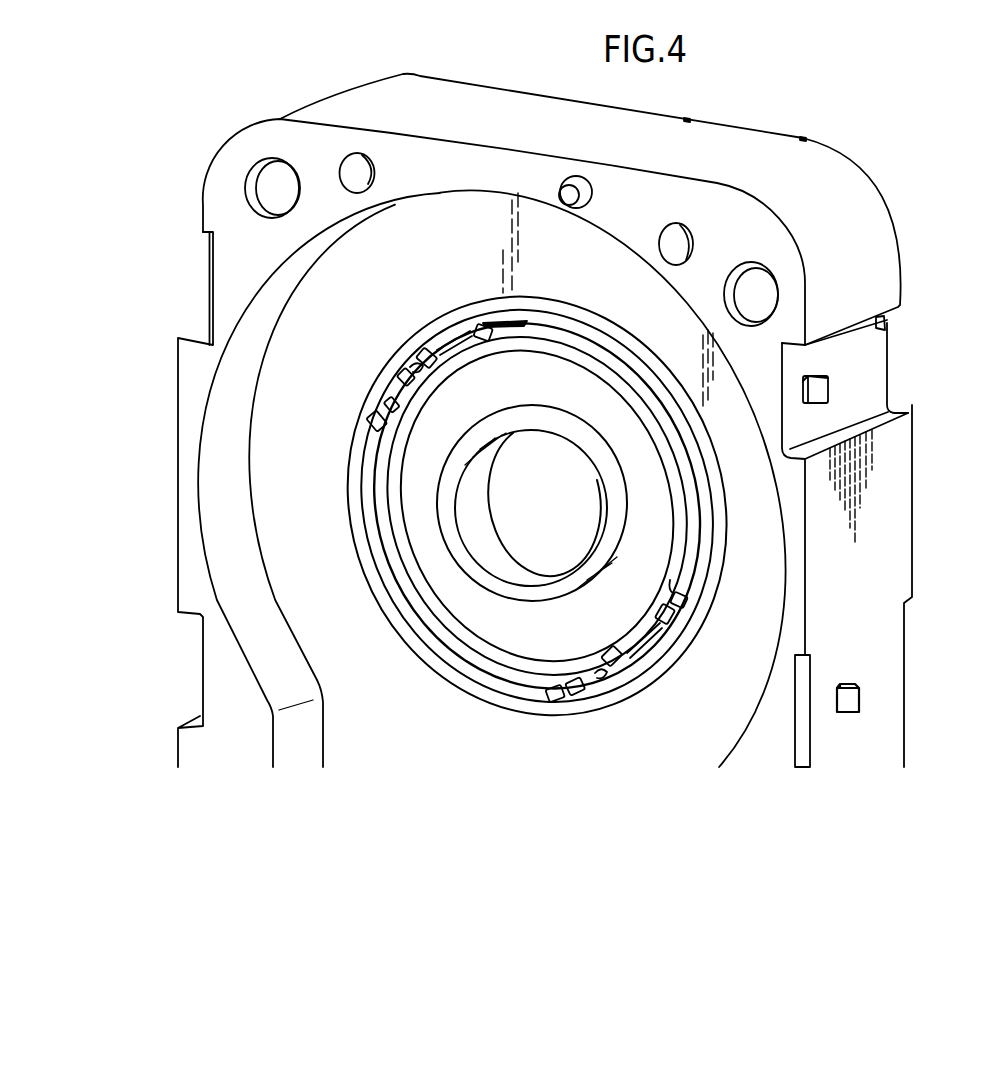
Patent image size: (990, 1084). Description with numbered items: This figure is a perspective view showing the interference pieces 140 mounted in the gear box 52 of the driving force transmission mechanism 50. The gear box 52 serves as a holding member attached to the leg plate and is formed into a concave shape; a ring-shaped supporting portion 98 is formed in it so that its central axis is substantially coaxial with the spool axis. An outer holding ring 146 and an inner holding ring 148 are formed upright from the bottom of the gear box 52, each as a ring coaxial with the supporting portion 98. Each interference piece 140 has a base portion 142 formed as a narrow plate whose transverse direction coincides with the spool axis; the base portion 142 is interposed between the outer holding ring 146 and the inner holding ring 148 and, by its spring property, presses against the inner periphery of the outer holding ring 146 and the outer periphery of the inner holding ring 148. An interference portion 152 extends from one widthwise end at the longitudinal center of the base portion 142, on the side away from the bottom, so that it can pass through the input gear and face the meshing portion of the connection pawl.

The driving force transmission mechanism 50 is at (891, 163).
The gear box 52 is at (904, 456).
The supporting portion 98 is at (542, 430).
The interference piece 140 is at (382, 385).
The base portion 142 is at (452, 345).
The outer holding ring 146 is at (411, 650).
The inner holding ring 148 is at (440, 608).
The interference portion 152 is at (417, 362).